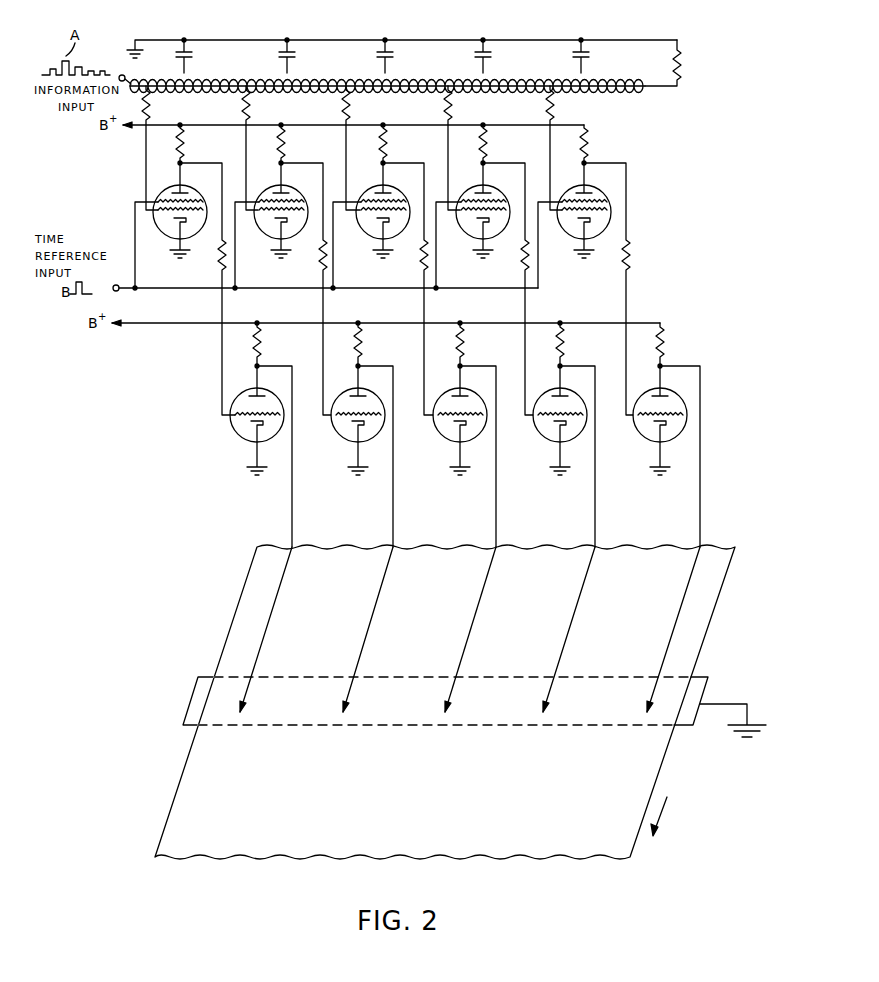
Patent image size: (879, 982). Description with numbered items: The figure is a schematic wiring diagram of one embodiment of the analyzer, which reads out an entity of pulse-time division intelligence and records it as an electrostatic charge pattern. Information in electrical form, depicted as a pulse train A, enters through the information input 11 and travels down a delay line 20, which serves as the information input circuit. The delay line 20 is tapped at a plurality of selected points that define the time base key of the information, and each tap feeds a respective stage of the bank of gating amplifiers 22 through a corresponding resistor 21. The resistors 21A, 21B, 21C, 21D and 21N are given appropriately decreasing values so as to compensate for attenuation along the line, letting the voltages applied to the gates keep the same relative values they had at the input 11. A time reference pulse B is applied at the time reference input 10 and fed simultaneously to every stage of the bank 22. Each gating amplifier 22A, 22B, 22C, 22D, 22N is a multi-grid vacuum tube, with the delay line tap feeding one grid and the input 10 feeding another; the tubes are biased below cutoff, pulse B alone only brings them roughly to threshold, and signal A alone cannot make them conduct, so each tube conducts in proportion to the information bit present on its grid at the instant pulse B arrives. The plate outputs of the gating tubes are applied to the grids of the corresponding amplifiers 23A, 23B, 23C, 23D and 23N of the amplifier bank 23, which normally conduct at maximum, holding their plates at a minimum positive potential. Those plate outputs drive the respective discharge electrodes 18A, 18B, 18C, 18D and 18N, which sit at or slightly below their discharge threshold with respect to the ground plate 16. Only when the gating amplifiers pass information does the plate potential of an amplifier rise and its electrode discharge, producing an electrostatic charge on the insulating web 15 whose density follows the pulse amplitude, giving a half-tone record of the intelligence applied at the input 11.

The time reference input 10 is at (116, 285).
The information input 11 is at (120, 74).
The insulating web 15 is at (712, 618).
The ground plate 16 is at (706, 690).
The discharge electrode 18A is at (247, 713).
The discharge electrode 18B is at (349, 713).
The discharge electrode 18C is at (451, 713).
The discharge electrode 18D is at (549, 713).
The discharge electrode 18N is at (652, 713).
The delay line 20 is at (420, 50).
The resistor 21 is at (393, 148).
The resistor 21A is at (151, 106).
The resistor 21B is at (251, 106).
The resistor 21C is at (351, 106).
The resistor 21D is at (453, 106).
The resistor 21N is at (555, 106).
The bank of gating amplifiers 22 is at (406, 269).
The gating amplifier 22A is at (207, 187).
The gating amplifier 22B is at (308, 187).
The gating amplifier 22C is at (410, 187).
The gating amplifier 22D is at (510, 187).
The gating amplifier 22N is at (611, 187).
The amplifier bank 23 is at (481, 434).
The amplifier 23A is at (244, 437).
The amplifier 23B is at (345, 437).
The amplifier 23C is at (447, 437).
The amplifier 23D is at (547, 437).
The amplifier 23N is at (647, 437).